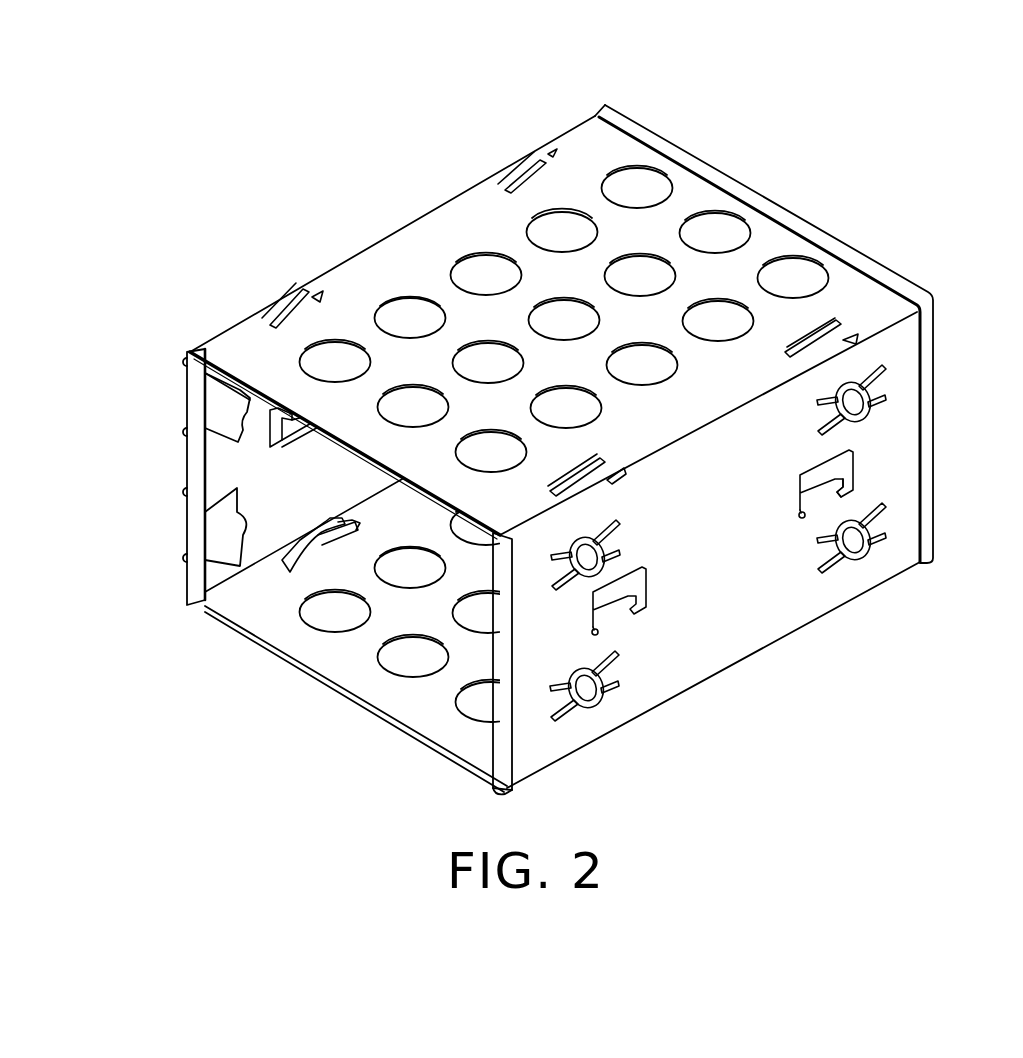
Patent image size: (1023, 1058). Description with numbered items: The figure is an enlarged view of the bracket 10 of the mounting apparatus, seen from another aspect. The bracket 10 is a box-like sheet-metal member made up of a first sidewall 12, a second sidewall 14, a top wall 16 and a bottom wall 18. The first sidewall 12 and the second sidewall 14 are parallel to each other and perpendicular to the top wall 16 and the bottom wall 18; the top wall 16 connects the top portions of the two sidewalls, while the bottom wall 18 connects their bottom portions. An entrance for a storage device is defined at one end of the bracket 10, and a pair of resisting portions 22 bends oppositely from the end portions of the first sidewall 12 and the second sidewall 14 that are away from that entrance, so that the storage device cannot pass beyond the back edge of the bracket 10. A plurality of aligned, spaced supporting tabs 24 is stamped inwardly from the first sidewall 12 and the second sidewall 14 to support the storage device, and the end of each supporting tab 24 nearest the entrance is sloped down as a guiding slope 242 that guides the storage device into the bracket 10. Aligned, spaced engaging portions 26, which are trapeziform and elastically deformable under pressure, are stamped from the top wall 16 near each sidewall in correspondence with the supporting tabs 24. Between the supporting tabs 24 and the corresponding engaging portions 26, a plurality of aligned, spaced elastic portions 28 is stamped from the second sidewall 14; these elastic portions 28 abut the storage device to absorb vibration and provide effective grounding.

The bracket 10 is at (295, 44).
The first sidewall 12 is at (247, 462).
The second sidewall 14 is at (695, 625).
The top wall 16 is at (697, 193).
The bottom wall 18 is at (350, 660).
The resisting portion 22 is at (195, 522).
The supporting tab 24 is at (845, 492).
The guiding slope 242 is at (870, 452).
The engaging portion 26 is at (520, 172).
The elastic portion 28 is at (875, 395).